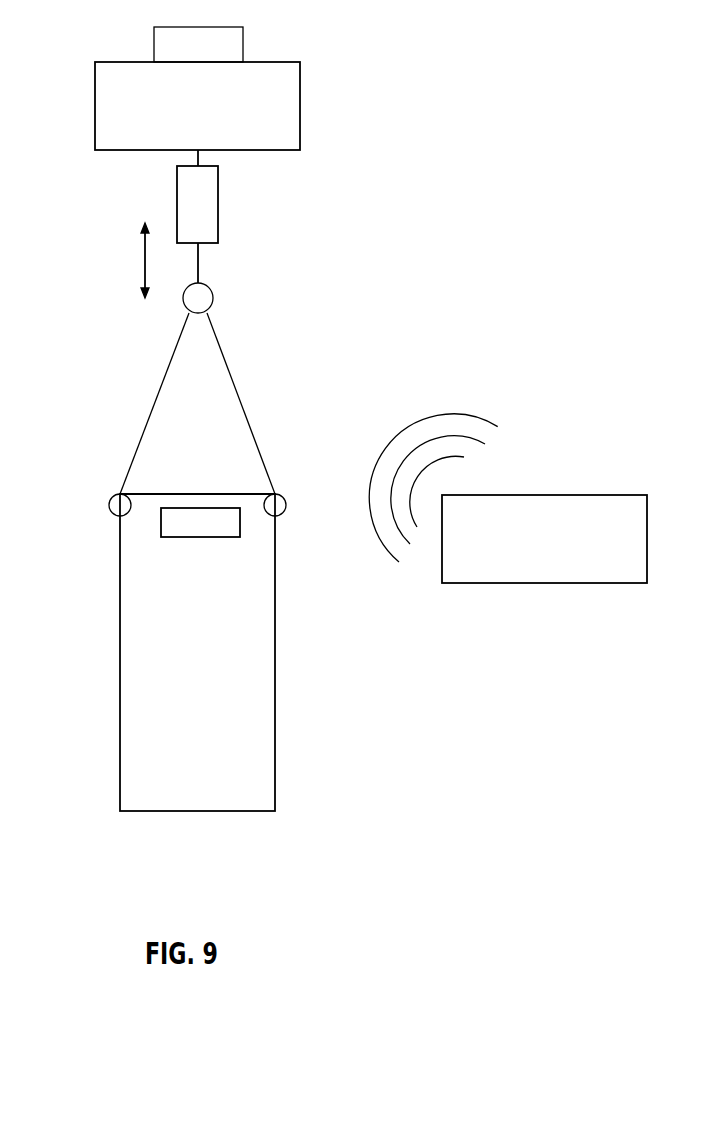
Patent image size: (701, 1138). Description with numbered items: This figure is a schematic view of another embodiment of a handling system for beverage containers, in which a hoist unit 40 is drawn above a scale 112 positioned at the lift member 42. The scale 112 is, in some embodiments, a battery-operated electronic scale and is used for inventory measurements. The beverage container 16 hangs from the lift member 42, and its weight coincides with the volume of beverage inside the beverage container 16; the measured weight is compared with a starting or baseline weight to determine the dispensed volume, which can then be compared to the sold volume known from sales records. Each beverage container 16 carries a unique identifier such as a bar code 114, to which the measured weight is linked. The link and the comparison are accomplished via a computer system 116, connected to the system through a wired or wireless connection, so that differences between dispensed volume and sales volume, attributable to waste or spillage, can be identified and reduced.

The hoist / winch unit 40 is at (183, 117).
The scale 112 is at (177, 205).
The lift member 42 is at (200, 263).
The beverage container 16 is at (187, 665).
The bar code 114 is at (160, 520).
The computer system 116 is at (525, 551).